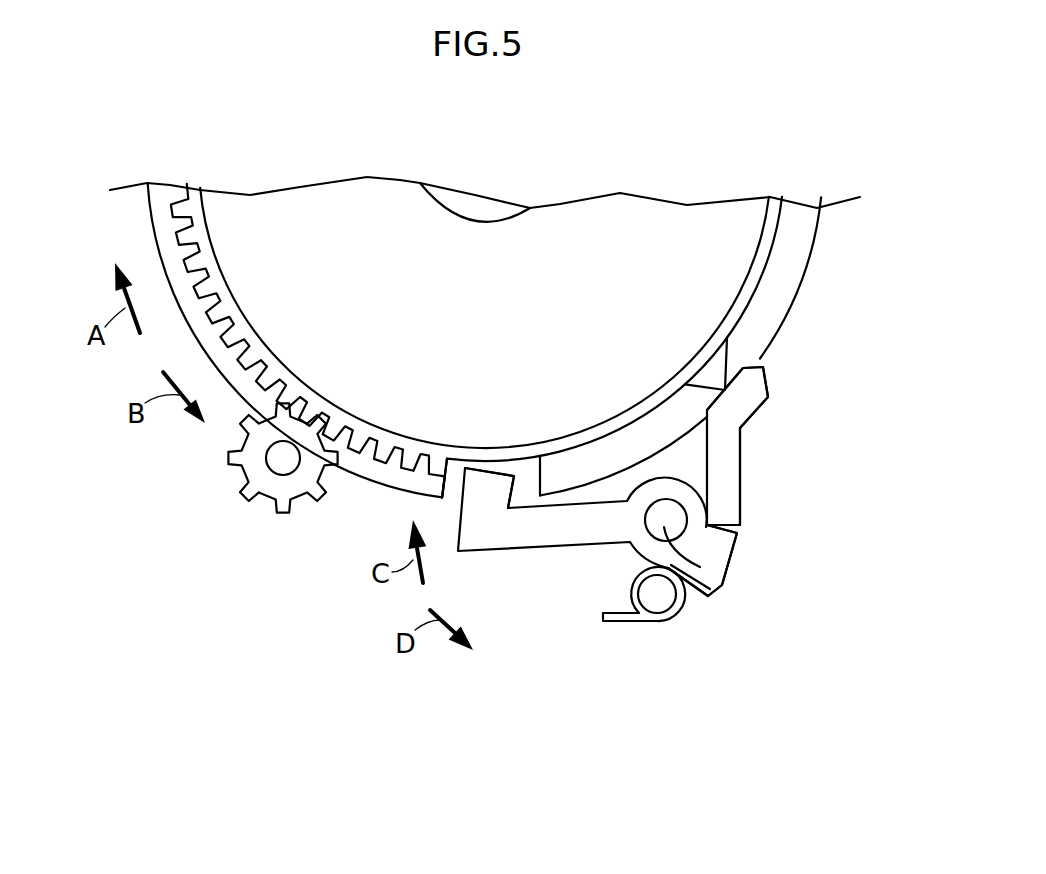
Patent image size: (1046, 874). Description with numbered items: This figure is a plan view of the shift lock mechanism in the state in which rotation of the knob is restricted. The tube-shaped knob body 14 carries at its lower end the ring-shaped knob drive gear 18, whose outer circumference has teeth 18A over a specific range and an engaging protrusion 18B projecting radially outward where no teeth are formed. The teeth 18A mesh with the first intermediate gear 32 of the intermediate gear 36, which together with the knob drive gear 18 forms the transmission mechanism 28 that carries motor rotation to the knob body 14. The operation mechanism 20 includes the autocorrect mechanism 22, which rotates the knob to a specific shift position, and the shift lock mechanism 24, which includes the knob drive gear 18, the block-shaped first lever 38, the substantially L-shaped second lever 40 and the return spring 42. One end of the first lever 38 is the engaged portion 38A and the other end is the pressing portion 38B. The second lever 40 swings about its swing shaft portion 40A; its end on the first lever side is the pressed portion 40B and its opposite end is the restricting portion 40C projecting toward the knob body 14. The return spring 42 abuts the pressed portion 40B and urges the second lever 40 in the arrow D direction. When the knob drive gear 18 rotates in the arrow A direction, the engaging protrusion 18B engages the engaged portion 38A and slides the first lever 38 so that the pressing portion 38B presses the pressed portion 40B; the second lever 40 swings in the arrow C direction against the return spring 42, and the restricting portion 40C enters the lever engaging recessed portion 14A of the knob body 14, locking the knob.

The knob body 14 is at (491, 342).
The lever engaging recessed portion 14A is at (522, 470).
The knob drive gear 18 is at (497, 341).
The teeth 18A is at (263, 375).
The engaging protrusion 18B is at (733, 350).
The operation mechanism 20 is at (508, 717).
The autocorrect mechanism 22 is at (241, 540).
The shift lock mechanism 24 is at (677, 655).
The transmission mechanism 28 is at (198, 507).
The first intermediate gear 32 is at (278, 510).
The intermediate gear 36 is at (282, 525).
The first lever 38 is at (791, 423).
The engaged portion 38A is at (768, 383).
The pressing portion 38B is at (743, 500).
The second lever 40 is at (646, 525).
The swing shaft portion 40A is at (727, 579).
The pressed portion 40B is at (733, 563).
The restricting portion 40C is at (484, 467).
The return spring 42 is at (605, 624).